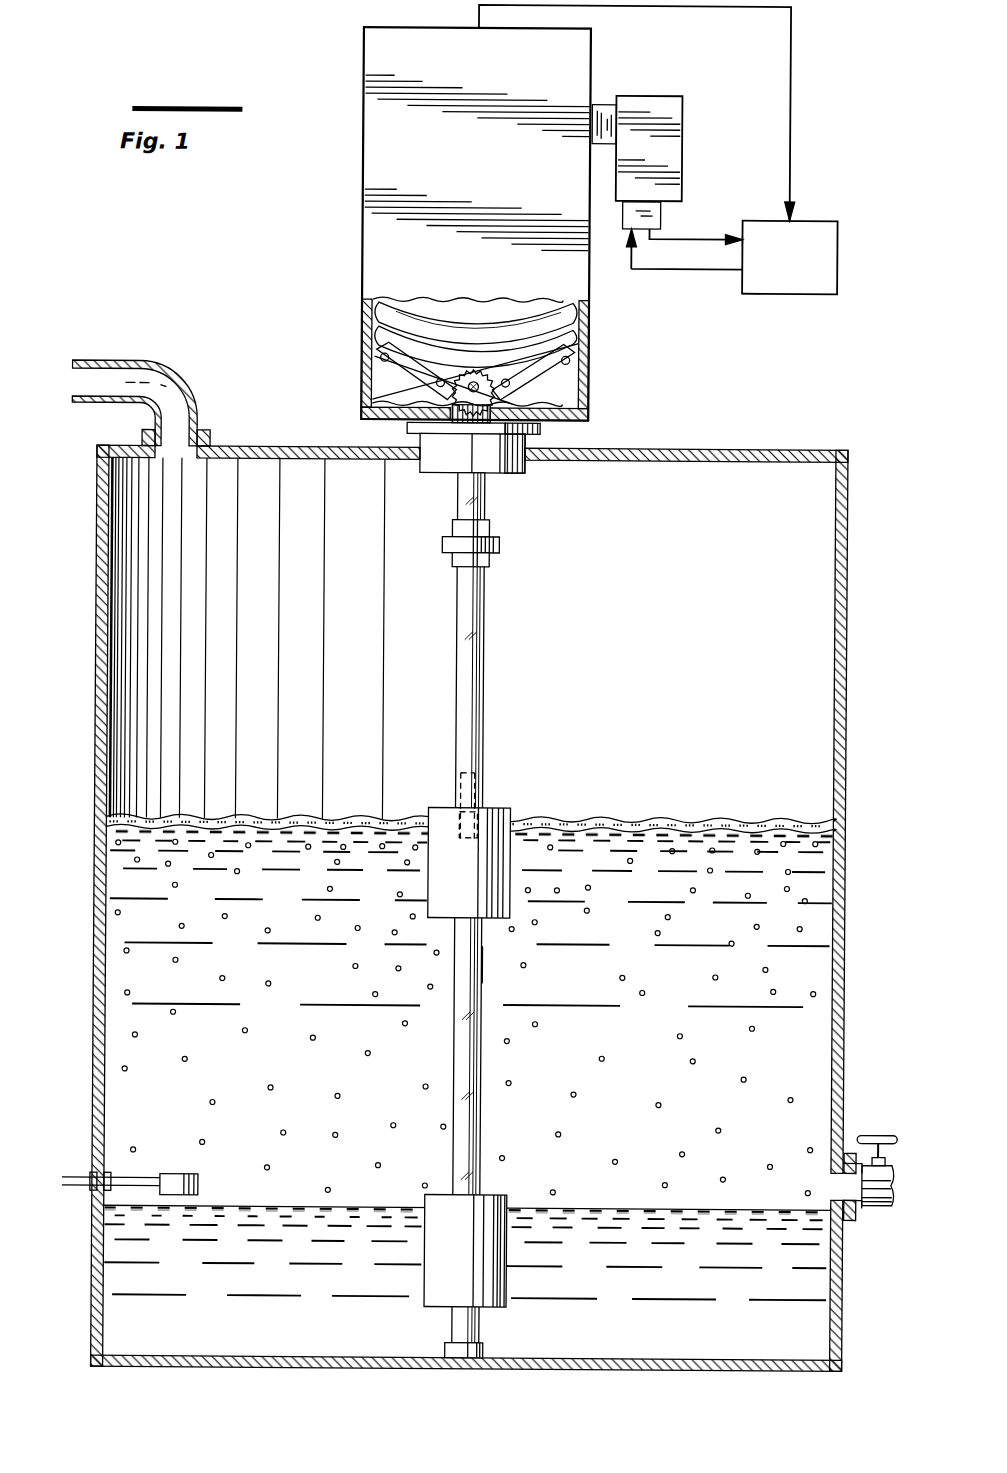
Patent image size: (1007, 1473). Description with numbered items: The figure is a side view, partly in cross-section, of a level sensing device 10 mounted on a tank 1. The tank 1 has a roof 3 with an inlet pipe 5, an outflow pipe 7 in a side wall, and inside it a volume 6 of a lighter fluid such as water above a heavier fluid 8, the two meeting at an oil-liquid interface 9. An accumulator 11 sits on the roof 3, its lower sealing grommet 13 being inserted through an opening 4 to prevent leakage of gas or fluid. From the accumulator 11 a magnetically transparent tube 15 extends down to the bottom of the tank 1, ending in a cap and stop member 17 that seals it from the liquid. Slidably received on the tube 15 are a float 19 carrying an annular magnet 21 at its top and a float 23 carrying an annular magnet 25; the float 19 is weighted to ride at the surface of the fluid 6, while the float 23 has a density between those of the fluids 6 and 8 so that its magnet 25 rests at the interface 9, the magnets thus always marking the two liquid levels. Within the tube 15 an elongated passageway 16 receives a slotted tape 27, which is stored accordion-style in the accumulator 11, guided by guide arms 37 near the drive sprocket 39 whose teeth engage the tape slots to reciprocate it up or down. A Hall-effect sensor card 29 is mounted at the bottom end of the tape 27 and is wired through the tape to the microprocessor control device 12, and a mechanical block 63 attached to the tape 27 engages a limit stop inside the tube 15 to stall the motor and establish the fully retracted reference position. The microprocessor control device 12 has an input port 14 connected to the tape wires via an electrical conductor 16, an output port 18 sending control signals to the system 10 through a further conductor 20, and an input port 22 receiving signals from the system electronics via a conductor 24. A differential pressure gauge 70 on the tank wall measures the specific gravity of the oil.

The tank 1 is at (848, 520).
The roof 3 is at (750, 450).
The opening 4 is at (533, 473).
The inlet pipe 5 is at (148, 368).
The volume of lighter fluid 6 is at (308, 986).
The outflow pipe 7 is at (881, 1205).
The fluid 8 is at (282, 1289).
The oil-liquid interface 9 is at (622, 1200).
The level sensing device 10 is at (360, 178).
The accumulator 11 is at (360, 232).
The microprocessor control device 12 is at (837, 252).
The lower sealing grommet 13 is at (505, 465).
The input port 14 is at (790, 220).
The magnetically transparent tube 15 is at (485, 1067).
The elongated passageway / electrical conductor 16 is at (788, 78).
The cap and stop member 17 is at (433, 1362).
The output port 18 is at (740, 275).
The float 19 is at (507, 873).
The electric conductor 20 is at (659, 271).
The magnet 21 is at (440, 815).
The input port 22 is at (741, 236).
The float 23 is at (509, 1285).
The conductor 24 is at (672, 240).
The magnet 25 is at (505, 1193).
The slotted tape 27 is at (590, 340).
The Hall-effect sensor card 29 is at (474, 830).
The guide arms 37 is at (360, 348).
The sprocket 39 is at (360, 388).
The mechanical block 63 is at (486, 773).
The differential pressure gauge 70 is at (182, 1186).